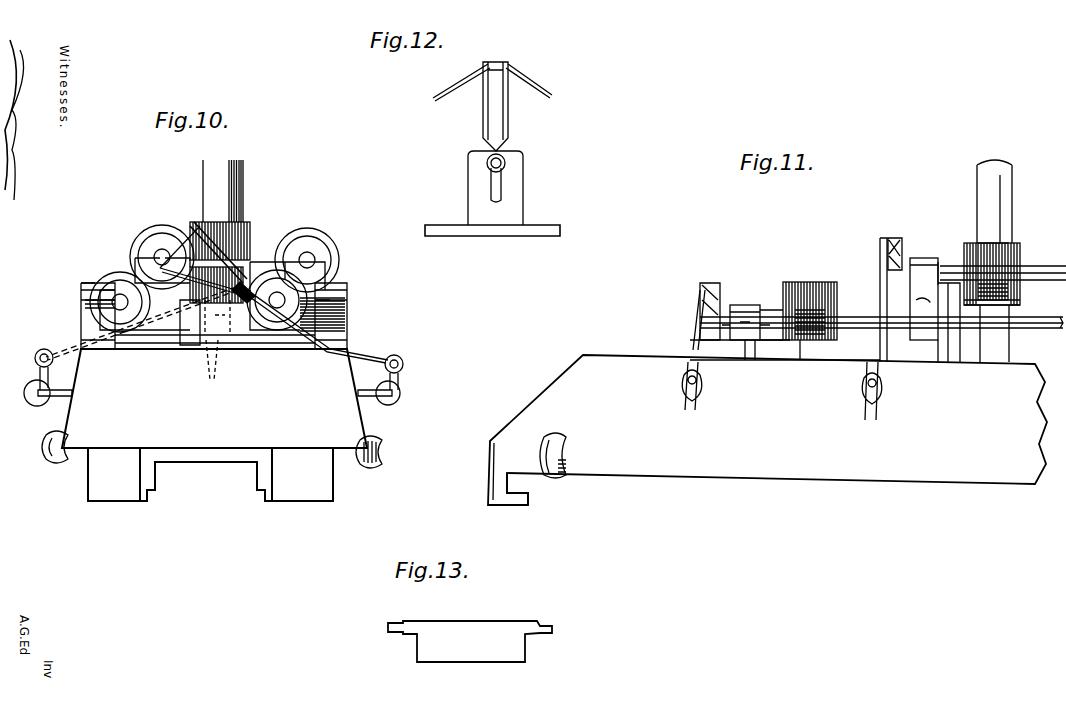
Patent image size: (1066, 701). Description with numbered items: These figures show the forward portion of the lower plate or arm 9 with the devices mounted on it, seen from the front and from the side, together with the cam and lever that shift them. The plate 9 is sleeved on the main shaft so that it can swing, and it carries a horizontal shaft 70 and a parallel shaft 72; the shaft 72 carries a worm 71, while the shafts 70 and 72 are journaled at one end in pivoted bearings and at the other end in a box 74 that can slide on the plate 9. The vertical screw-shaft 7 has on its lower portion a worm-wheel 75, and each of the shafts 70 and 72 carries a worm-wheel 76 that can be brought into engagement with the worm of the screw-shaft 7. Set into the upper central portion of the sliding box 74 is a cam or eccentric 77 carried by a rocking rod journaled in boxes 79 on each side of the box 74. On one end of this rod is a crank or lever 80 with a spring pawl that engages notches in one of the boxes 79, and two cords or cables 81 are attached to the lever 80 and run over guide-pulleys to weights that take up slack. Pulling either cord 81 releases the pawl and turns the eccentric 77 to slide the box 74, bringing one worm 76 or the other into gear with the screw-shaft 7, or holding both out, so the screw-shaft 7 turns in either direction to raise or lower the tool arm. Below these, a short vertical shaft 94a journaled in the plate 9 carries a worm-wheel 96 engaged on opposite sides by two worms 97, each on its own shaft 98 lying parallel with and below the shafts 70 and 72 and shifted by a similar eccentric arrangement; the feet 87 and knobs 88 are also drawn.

In FIG. 10, the screw-shaft 7 is at (243, 196).
In FIG. 11, the screw-shaft 7 is at (1012, 224).
In FIG. 10, the lower plate or arm 9 is at (214, 398).
In FIG. 11, the lower plate or arm 9 is at (767, 430).
In FIG. 10, the horizontal shaft 70 is at (325, 272).
In FIG. 11, the horizontal shaft 70 is at (950, 262).
In FIG. 10, the worm 71 is at (213, 377).
In FIG. 10, the shaft 72 is at (140, 252).
In FIG. 10, the box 74 is at (150, 316).
In FIG. 11, the box 74 is at (750, 305).
In FIG. 10, the worm-wheel 75 is at (250, 240).
In FIG. 11, the worm-wheel 75 is at (1020, 256).
In FIG. 10, the worm-wheel 76 is at (150, 236).
In FIG. 11, the worm-wheel 76 is at (1020, 298).
In FIG. 10, the cam or eccentric 77 is at (216, 360).
In FIG. 12, the cam or eccentric 77 is at (491, 186).
In FIG. 13, the cam or eccentric 77 is at (484, 629).
In FIG. 10, the boxes 79 is at (240, 272).
In FIG. 12, the boxes 79 is at (517, 186).
In FIG. 11, the boxes 79 is at (700, 344).
In FIG. 12, the crank or lever 80 is at (506, 146).
In FIG. 11, the crank or lever 80 is at (700, 318).
In FIG. 10, the cords or cables 81 is at (196, 318).
In FIG. 12, the cords or cables 81 is at (452, 87).
In FIG. 11, the cords or cables 81 is at (700, 368).
In FIG. 10, the foot 87 is at (210, 474).
In FIG. 11, the foot 87 is at (515, 505).
In FIG. 10, the knob 88 is at (46, 446).
In FIG. 11, the knob 88 is at (558, 476).
In FIG. 11, the short vertical shaft 94a is at (810, 350).
In FIG. 10, the worm-wheel 96 is at (262, 290).
In FIG. 11, the worm-wheel 96 is at (838, 286).
In FIG. 10, the worms 97 is at (100, 290).
In FIG. 11, the worms 97 is at (838, 300).
In FIG. 10, the shafts 98 is at (105, 312).
In FIG. 11, the shafts 98 is at (1040, 328).